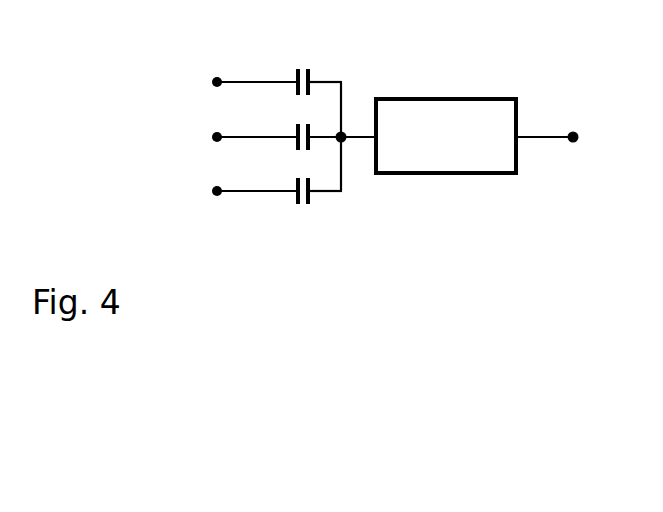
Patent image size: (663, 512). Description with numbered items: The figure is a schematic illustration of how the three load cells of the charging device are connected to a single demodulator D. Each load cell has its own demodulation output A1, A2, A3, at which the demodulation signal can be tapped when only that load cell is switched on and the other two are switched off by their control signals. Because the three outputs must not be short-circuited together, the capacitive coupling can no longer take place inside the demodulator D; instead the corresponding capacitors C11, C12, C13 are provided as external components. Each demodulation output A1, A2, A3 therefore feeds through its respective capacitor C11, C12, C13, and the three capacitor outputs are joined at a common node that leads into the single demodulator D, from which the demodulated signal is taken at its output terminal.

The demodulation output A1 is at (247, 68).
The demodulation output A2 is at (247, 122).
The demodulation output A3 is at (247, 176).
The capacitor C11 is at (325, 73).
The capacitor C12 is at (336, 126).
The capacitor C13 is at (325, 180).
The demodulator D is at (446, 136).